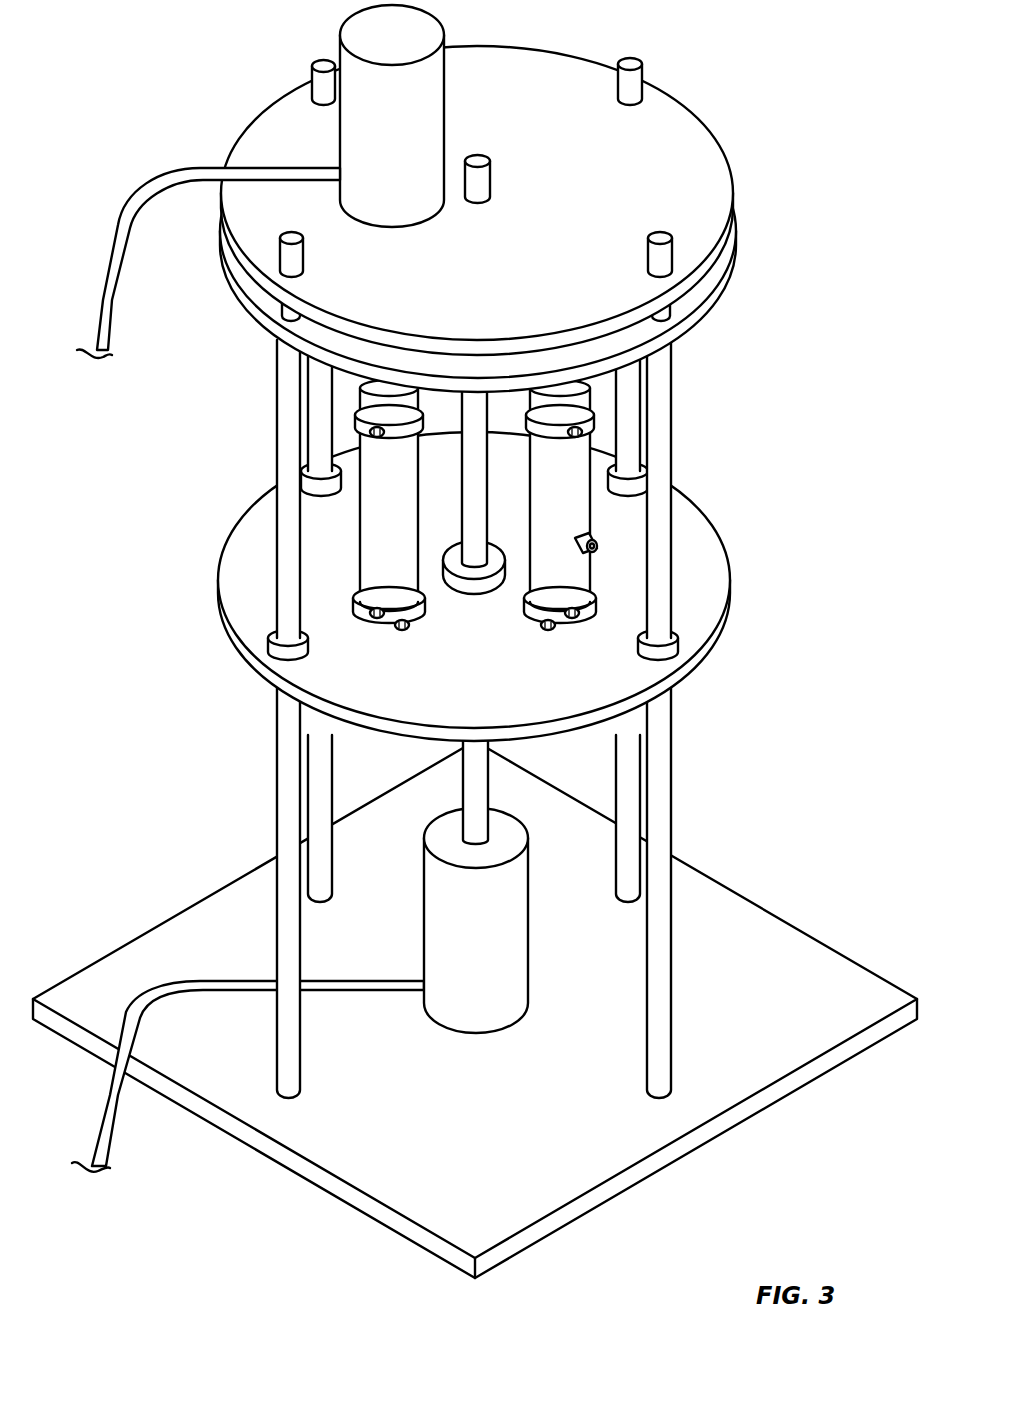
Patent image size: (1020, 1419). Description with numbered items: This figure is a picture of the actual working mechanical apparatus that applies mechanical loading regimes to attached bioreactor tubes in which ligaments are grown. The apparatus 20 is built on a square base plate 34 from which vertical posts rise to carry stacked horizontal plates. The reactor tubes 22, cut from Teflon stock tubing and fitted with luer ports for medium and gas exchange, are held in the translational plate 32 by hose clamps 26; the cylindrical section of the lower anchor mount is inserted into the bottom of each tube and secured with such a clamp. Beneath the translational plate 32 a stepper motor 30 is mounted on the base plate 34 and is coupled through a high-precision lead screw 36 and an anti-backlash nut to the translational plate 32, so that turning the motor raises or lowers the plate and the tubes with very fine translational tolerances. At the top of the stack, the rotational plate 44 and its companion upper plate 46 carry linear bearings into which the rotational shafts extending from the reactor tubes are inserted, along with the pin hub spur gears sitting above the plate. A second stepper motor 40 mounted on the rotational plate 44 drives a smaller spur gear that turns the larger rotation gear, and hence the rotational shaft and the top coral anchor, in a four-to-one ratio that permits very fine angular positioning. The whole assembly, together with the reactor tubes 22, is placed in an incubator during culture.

The tube assembly 20 is at (388, 400).
The tube 22 is at (450, 449).
The clamp 26 is at (381, 454).
The motor 30 is at (509, 956).
The intermediate plate 32 is at (741, 590).
The base plate 34 is at (745, 1137).
The drive shaft 36 is at (477, 776).
The motor housing 40 is at (427, 125).
The top plate 44 is at (670, 130).
The upper plate 46 is at (742, 235).